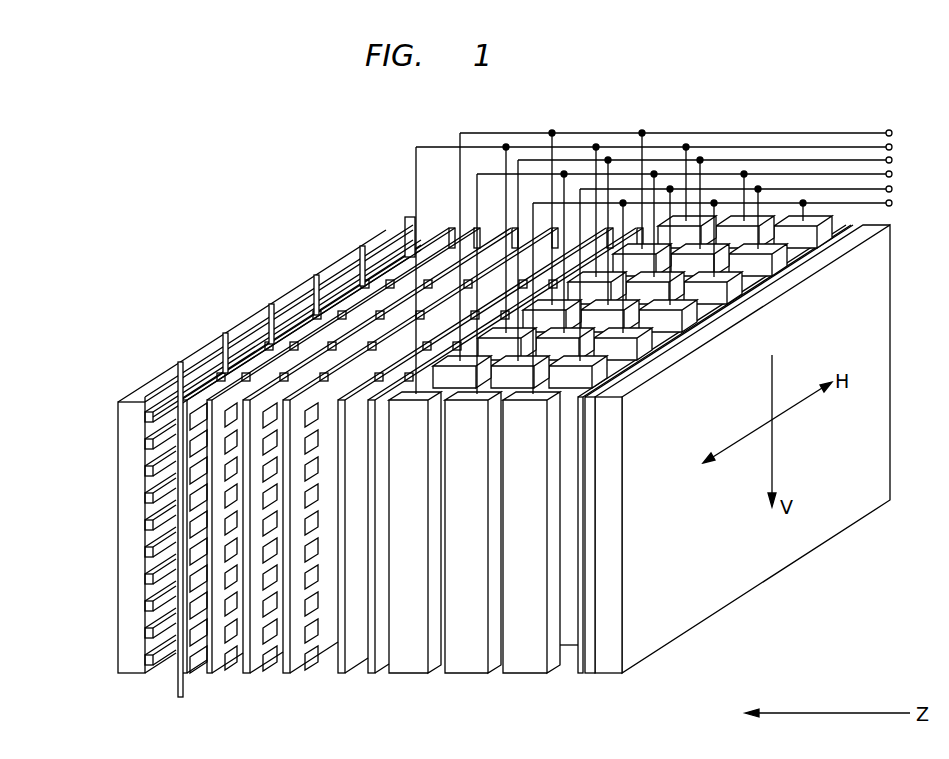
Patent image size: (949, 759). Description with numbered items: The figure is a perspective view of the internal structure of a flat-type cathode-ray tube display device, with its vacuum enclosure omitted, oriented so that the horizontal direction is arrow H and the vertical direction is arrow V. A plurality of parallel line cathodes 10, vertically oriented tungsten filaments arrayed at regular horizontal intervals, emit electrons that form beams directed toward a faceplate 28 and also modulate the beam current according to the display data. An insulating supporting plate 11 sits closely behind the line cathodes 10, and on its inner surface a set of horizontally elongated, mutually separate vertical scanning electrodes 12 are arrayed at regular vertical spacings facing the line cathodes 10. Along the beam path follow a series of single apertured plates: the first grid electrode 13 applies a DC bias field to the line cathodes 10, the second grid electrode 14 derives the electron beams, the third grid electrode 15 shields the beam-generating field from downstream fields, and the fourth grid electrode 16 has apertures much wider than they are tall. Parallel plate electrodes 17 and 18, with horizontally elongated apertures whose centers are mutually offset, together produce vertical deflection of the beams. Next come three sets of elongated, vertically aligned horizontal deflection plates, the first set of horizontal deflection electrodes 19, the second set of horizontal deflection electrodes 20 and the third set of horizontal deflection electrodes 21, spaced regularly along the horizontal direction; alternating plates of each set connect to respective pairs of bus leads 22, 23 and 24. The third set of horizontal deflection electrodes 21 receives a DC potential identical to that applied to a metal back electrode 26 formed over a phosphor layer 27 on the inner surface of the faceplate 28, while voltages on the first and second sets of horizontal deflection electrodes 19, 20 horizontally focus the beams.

The line cathodes 10 is at (270, 305).
The supporting plate 11 is at (121, 420).
The vertical scanning electrodes 12 is at (143, 505).
The first grid electrode 13 is at (348, 298).
The second grid electrode 14 is at (223, 658).
The third grid electrode 15 is at (258, 660).
The fourth grid electrode 16 is at (305, 657).
The parallel plate electrode 17 is at (353, 662).
The parallel plate electrode 18 is at (382, 662).
The DH-1 electrodes 19 is at (413, 663).
The DH-2 electrodes 20 is at (460, 663).
The DH-3 electrodes 21 is at (518, 663).
The bus leads 22 is at (900, 128).
The bus leads 23 is at (900, 155).
The bus leads 24 is at (900, 184).
The metal back electrode 26 is at (578, 665).
The phosphor layer 27 is at (590, 667).
The faceplate 28 is at (643, 650).